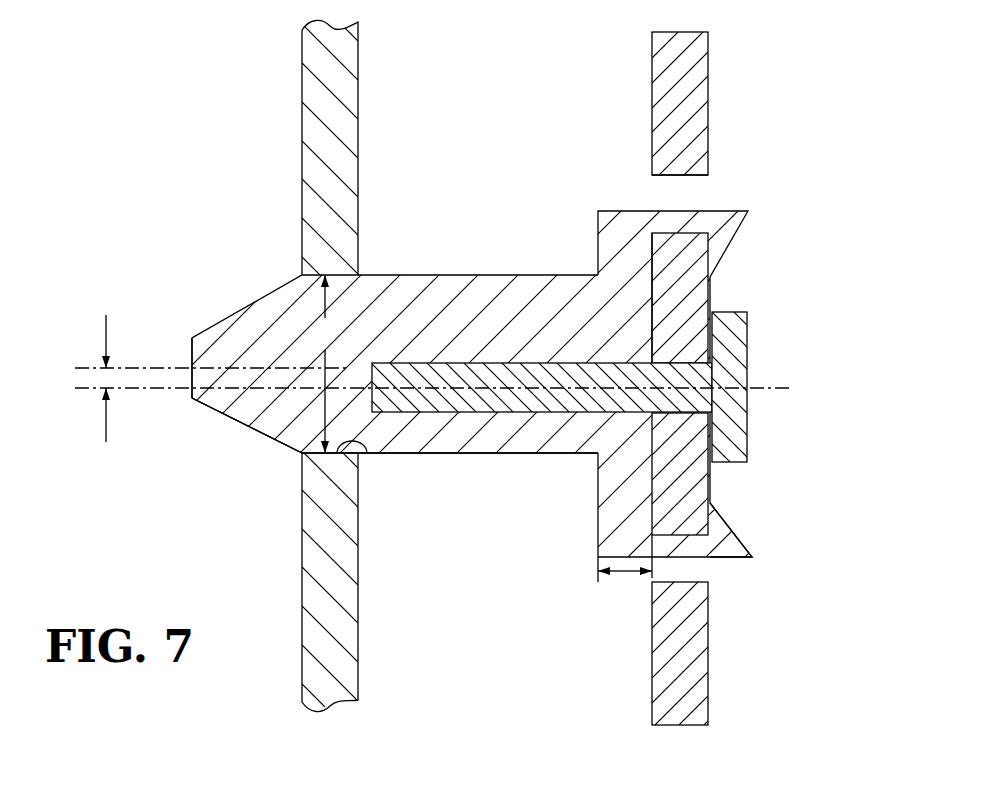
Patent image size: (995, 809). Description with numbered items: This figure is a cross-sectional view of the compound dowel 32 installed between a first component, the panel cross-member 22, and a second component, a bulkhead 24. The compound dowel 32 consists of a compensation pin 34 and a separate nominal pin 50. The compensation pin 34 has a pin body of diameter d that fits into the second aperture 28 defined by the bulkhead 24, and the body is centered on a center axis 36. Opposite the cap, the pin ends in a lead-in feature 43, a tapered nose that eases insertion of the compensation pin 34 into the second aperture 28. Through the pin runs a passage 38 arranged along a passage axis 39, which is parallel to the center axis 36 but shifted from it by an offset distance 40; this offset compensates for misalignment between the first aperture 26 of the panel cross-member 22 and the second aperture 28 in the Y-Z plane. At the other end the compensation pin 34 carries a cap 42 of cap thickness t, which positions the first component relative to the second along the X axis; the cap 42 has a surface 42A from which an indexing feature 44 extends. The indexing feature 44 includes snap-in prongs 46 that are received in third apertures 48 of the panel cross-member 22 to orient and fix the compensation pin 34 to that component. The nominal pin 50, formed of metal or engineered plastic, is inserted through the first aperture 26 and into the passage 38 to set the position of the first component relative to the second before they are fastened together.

The panel cross-member 22 is at (651, 68).
The bulkhead 24 is at (301, 127).
The first aperture 26 is at (691, 363).
The second aperture 28 is at (367, 453).
The compound dowel 32 is at (770, 296).
The compensation pin 34 is at (458, 260).
The center axis 36 is at (173, 368).
The passage 38 is at (516, 415).
The passage axis 39 is at (140, 392).
The offset distance 40 is at (106, 400).
The cap 42 is at (598, 216).
The cap surface 42A is at (655, 290).
The lead-in feature 43 is at (236, 422).
The indexing feature 44 is at (744, 530).
The snap-in prongs 46 is at (713, 560).
The third apertures 48 is at (680, 176).
The nominal pin 50 is at (748, 430).
The pin body diameter d is at (322, 364).
The cap thickness t is at (621, 577).